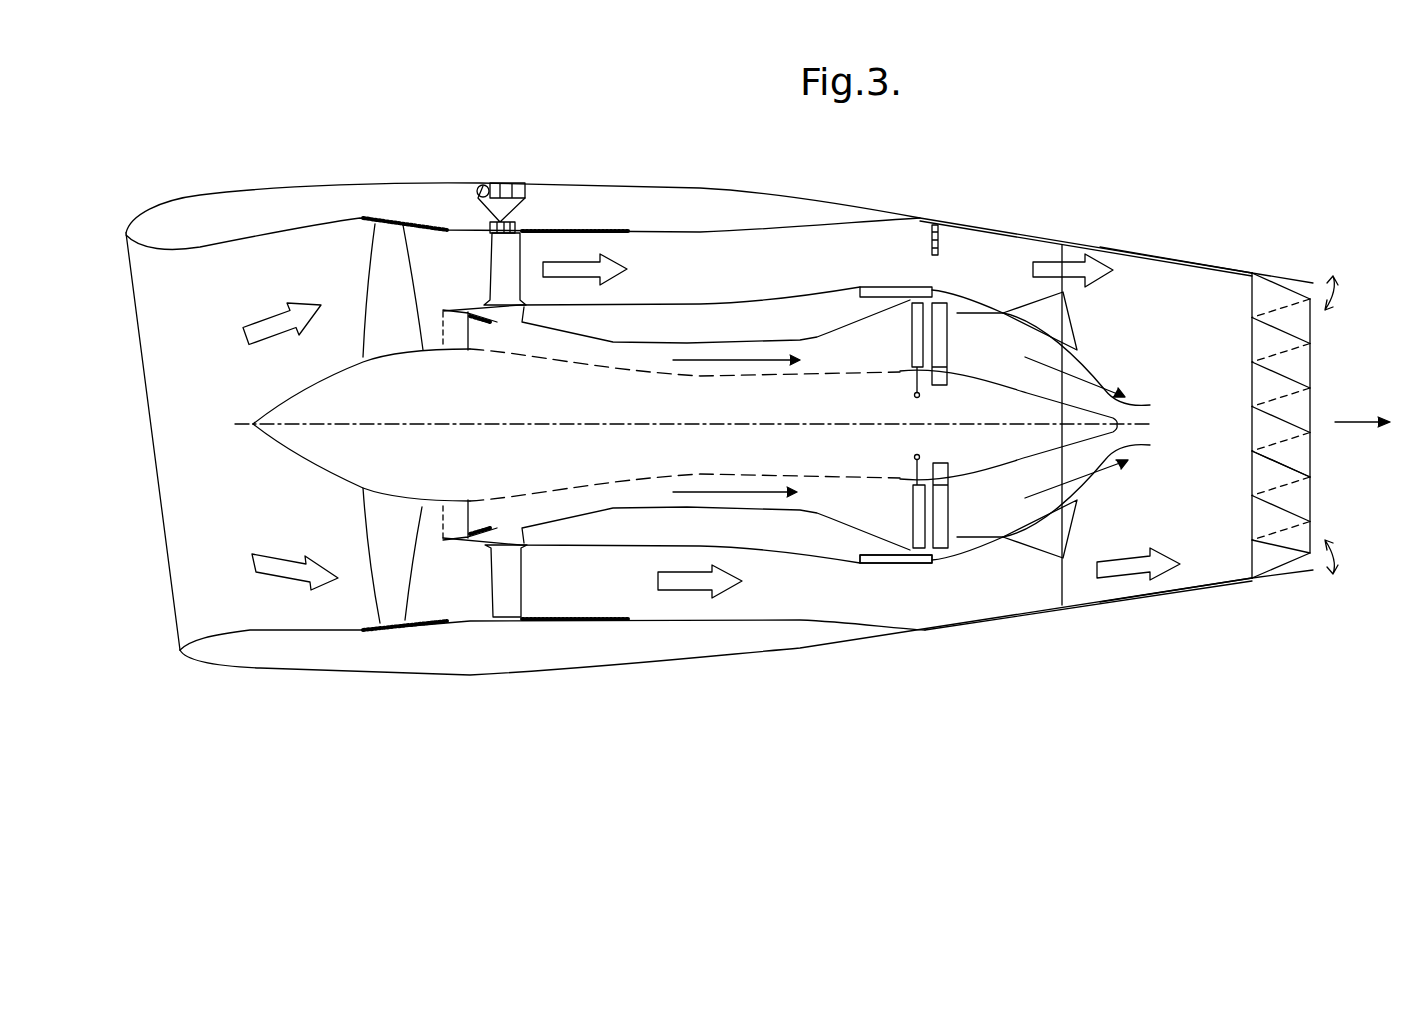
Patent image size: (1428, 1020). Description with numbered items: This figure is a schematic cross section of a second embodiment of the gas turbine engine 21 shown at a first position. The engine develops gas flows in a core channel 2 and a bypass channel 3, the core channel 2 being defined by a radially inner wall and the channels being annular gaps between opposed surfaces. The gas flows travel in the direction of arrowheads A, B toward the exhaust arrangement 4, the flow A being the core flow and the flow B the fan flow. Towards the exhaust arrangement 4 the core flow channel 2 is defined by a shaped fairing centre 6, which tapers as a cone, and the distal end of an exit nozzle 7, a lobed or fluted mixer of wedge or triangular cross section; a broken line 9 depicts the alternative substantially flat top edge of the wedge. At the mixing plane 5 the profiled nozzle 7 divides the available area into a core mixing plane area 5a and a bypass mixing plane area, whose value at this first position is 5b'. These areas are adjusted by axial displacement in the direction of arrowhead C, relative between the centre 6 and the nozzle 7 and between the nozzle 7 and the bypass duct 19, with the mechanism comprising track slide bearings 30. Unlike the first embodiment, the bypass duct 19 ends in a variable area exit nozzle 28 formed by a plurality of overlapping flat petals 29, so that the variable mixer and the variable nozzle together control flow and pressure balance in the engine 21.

The engine 21 is at (420, 167).
The bypass channel 3 is at (720, 245).
The core channel 2 is at (668, 286).
The shaped fairing centre 6 is at (1008, 415).
The exit nozzle 7 is at (1037, 315).
The core mixing plane area 5a is at (1150, 405).
The mixing plane 5 is at (1052, 590).
The bypass mixing plane area at first position 5b' is at (1016, 431).
The track slide bearings 30 is at (887, 567).
The bypass duct 19 is at (1160, 258).
The broken line 9 is at (1205, 590).
The exhaust arrangement 4 is at (1316, 399).
The variable area exit nozzle 28 is at (1285, 280).
The overlapping flat petals 29 is at (1300, 455).
The core flow A is at (262, 318).
The fan flow B is at (723, 358).
The axial displacement direction C is at (1374, 424).